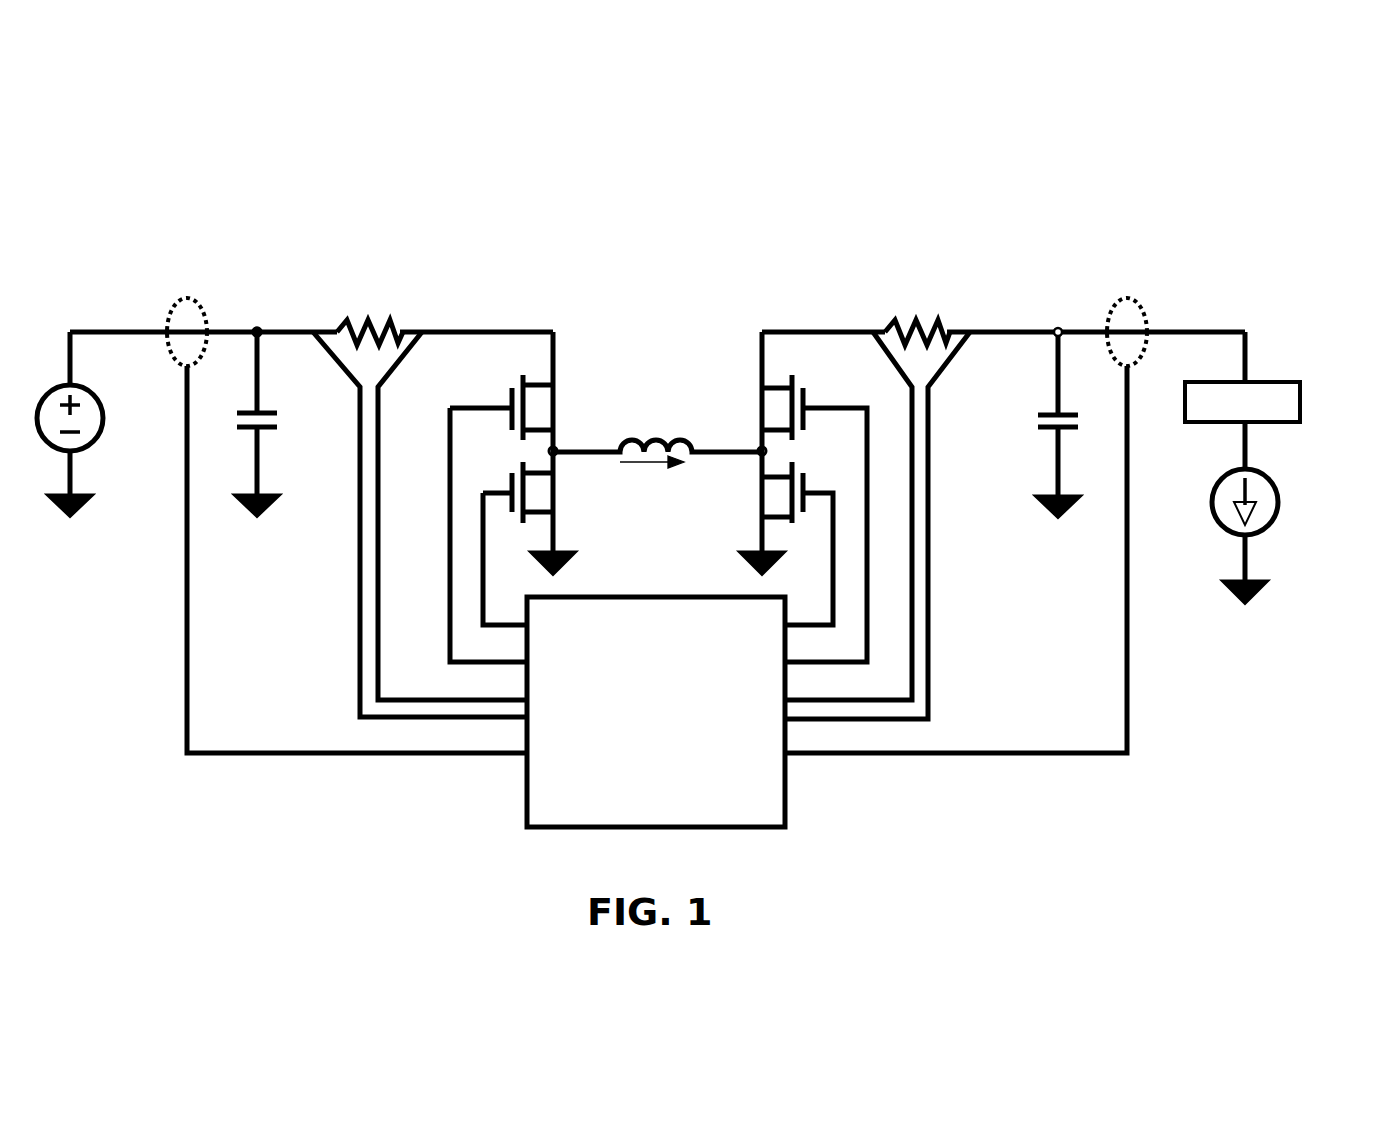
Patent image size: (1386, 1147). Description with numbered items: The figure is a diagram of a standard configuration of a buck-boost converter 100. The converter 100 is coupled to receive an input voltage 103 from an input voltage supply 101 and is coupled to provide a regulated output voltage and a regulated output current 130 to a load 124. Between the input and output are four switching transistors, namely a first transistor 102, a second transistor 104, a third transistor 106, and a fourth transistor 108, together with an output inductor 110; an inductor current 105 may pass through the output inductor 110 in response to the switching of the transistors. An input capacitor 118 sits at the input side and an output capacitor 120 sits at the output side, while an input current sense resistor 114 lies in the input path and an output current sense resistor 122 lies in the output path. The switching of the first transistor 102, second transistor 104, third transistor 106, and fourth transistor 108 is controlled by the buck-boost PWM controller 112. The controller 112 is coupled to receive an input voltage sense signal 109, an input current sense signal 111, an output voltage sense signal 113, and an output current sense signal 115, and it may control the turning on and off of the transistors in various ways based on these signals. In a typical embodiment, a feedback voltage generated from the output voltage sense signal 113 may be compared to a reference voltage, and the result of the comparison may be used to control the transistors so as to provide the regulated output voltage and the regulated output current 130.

The buck-boost converter 100 is at (662, 165).
The input voltage supply 101 is at (157, 298).
The transistor Q1 102 is at (576, 415).
The input voltage Vin 103 is at (1160, 288).
The transistor Q2 104 is at (578, 492).
The inductor current IL 105 is at (657, 485).
The transistor Q3 106 is at (736, 408).
The transistor Q4 108 is at (736, 494).
The input voltage sense signal 109 is at (184, 596).
The inductor Lout 110 is at (657, 403).
The input current sense signal 111 is at (355, 591).
The buck-boost PWM controller 112 is at (656, 712).
The output voltage sense signal 113 is at (1129, 620).
The input current sense resistor R1 114 is at (380, 242).
The output current sense signal 115 is at (931, 578).
The input capacitor Cin 118 is at (279, 420).
The output capacitor Cout 120 is at (1036, 426).
The output current sense resistor R2 122 is at (918, 242).
The load 124 is at (1300, 400).
The output current Iload 130 is at (1285, 478).